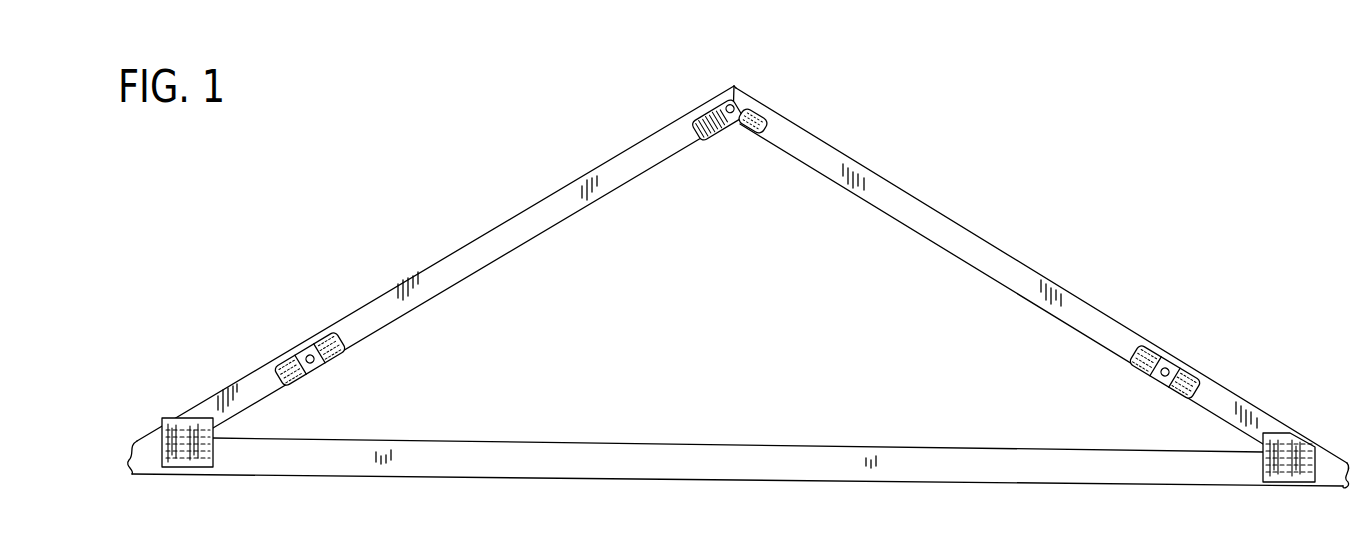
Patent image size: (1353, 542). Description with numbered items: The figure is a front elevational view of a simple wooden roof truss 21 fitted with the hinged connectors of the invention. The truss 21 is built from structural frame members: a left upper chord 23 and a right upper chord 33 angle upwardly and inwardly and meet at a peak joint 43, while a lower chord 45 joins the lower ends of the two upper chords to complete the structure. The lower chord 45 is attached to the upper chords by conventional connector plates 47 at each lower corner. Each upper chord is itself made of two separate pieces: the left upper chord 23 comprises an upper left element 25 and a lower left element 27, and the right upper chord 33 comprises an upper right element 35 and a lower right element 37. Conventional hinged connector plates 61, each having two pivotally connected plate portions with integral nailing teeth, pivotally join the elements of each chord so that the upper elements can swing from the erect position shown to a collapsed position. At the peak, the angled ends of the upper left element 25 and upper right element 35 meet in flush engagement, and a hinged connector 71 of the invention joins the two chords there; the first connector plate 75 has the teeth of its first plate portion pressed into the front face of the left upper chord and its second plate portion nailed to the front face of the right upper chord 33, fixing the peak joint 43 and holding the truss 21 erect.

The truss 21 is at (1017, 226).
The left upper chord 23 is at (497, 262).
The upper left element 25 is at (538, 208).
The lower left element 27 is at (247, 377).
The right upper chord 33 is at (957, 257).
The upper right element 35 is at (899, 193).
The lower right element 37 is at (1217, 392).
The peak joint 43 is at (736, 87).
The lower chord 45 is at (1020, 475).
The connector plates 47 is at (170, 468).
The hinged connector plates 61 is at (315, 368).
The hinged connector 71 is at (744, 138).
The first connector plate 75 is at (766, 112).